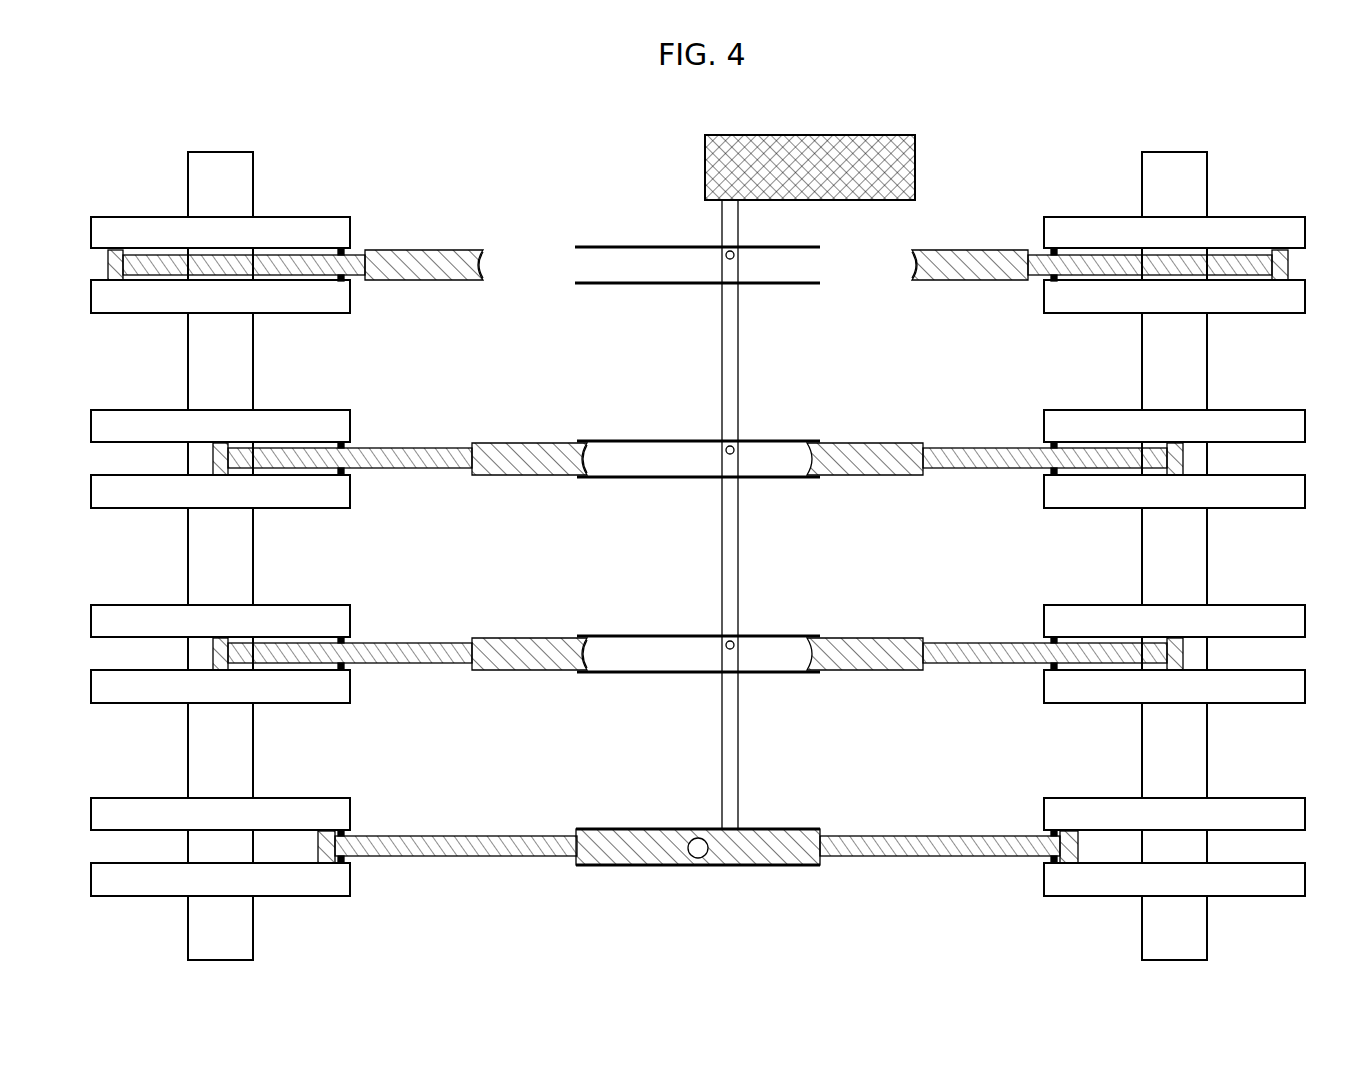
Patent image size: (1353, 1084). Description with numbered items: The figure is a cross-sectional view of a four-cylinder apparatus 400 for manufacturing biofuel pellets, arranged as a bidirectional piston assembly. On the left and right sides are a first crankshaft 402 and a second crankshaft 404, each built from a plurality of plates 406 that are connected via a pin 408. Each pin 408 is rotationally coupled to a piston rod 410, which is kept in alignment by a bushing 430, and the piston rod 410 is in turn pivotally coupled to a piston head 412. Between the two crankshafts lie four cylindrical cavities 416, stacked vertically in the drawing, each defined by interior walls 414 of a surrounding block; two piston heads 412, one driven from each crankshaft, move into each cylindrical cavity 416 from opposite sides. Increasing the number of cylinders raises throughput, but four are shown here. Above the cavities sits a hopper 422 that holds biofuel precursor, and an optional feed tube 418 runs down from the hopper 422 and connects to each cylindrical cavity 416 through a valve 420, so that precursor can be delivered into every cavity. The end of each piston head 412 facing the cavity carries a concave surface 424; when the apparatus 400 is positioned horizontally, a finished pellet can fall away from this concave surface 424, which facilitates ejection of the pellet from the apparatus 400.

The four-cylinder apparatus 400 is at (998, 132).
The first crankshaft 402 is at (222, 168).
The second crankshaft 404 is at (1178, 168).
The plates 406 is at (108, 232).
The pin 408 is at (112, 284).
The piston rod 410 is at (300, 252).
The piston head 412 is at (378, 252).
The interior walls 414 is at (590, 245).
The cylindrical cavities 416 is at (672, 896).
The feed tube 418 is at (742, 213).
The valve 420 is at (727, 252).
The hopper 422 is at (810, 167).
The concave surface 424 is at (487, 268).
The bushing 430 is at (346, 252).